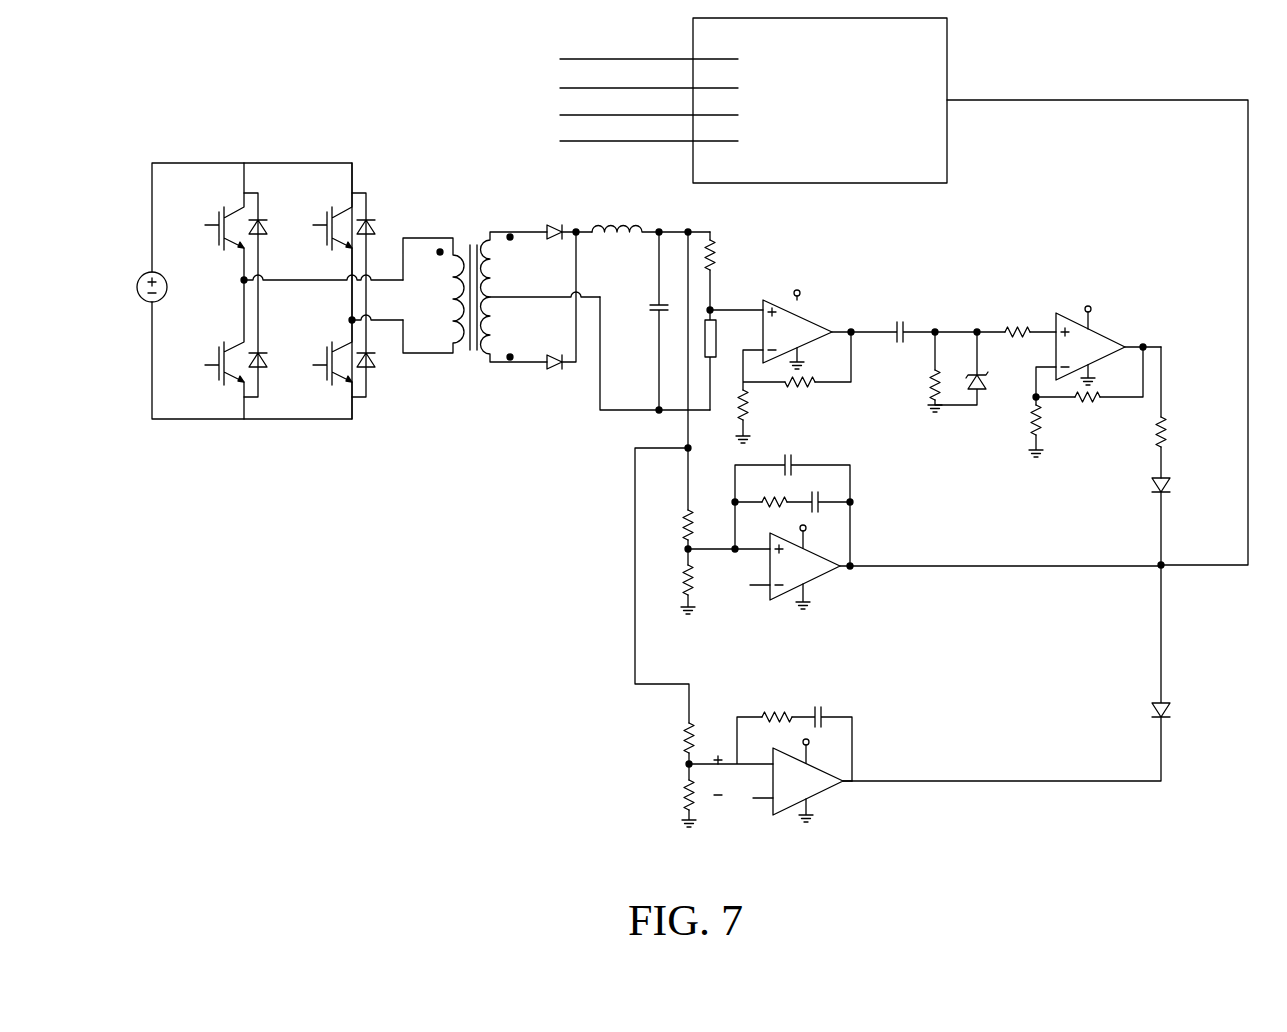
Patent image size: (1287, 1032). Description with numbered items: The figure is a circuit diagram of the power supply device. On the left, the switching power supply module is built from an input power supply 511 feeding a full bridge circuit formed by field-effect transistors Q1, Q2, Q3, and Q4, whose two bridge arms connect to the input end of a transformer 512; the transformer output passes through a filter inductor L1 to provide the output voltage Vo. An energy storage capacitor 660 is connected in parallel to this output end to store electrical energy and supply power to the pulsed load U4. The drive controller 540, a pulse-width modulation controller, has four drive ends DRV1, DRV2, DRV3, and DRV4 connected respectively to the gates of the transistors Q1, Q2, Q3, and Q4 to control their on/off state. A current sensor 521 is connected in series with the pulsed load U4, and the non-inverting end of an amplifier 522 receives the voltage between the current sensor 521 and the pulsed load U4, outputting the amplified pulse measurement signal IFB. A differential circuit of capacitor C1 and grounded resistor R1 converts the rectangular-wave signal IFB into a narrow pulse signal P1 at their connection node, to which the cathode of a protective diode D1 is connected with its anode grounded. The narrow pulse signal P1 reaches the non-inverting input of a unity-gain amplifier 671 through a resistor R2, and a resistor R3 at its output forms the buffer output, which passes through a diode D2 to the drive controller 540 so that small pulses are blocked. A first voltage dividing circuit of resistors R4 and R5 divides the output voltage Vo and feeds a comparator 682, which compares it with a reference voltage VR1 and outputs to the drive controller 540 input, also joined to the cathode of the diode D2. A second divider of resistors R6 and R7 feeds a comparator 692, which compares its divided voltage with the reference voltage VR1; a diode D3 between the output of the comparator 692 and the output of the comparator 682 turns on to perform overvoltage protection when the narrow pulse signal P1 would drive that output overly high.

The input power supply 511 is at (128, 287).
The field-effect transistor Q1 is at (208, 219).
The field-effect transistor Q2 is at (208, 356).
The field-effect transistor Q3 is at (340, 201).
The field-effect transistor Q4 is at (340, 411).
The transformer 512 is at (492, 396).
The filter inductor L1 is at (624, 220).
The output voltage Vo is at (691, 215).
The energy storage capacitor 660 is at (647, 317).
The pulsed load U4 is at (758, 266).
The current sensor 521 is at (705, 333).
The amplifier 522 is at (852, 320).
The pulse measurement signal IFB is at (873, 348).
The capacitor C1 is at (916, 303).
The narrow pulse signal P1 is at (958, 314).
The resistor R1 is at (925, 393).
The protective diode D1 is at (1020, 393).
The resistor R2 is at (1032, 308).
The amplifier 671 is at (1137, 328).
The resistor R3 is at (1203, 445).
The diode D2 is at (1210, 496).
The diode D3 is at (1210, 723).
The drive controller 540 is at (853, 112).
The drive end DRV1 is at (614, 59).
The drive end DRV2 is at (614, 88).
The drive end DRV3 is at (614, 115).
The drive end DRV4 is at (614, 141).
The resistor R4 is at (675, 533).
The resistor R5 is at (675, 590).
The reference voltage VR1 is at (741, 712).
The comparator 682 is at (860, 594).
The resistor R6 is at (675, 747).
The resistor R7 is at (675, 803).
The comparator 692 is at (870, 820).